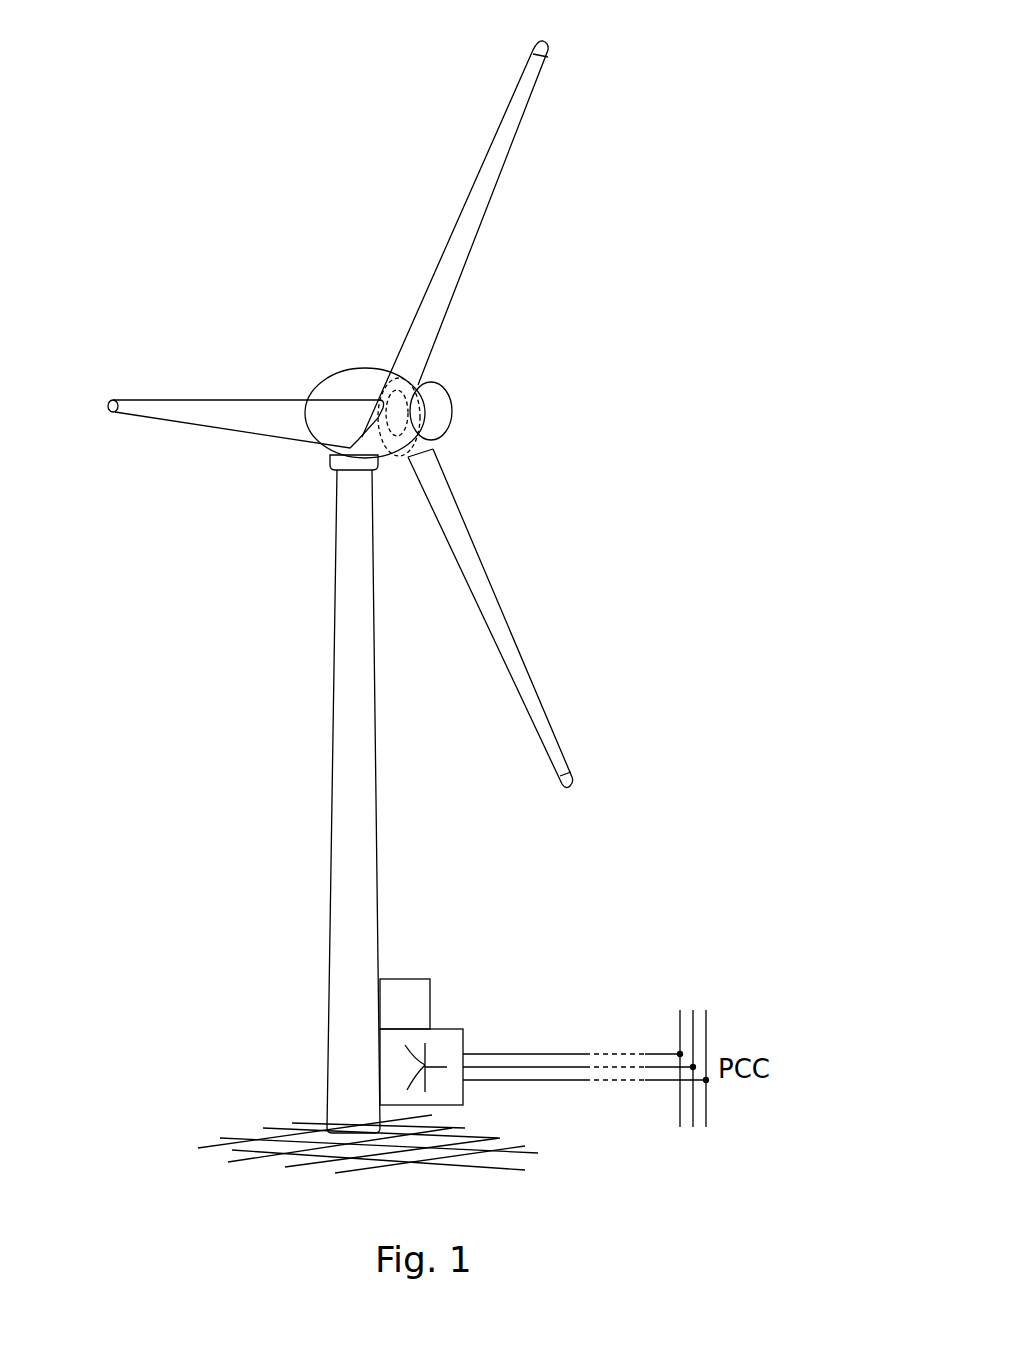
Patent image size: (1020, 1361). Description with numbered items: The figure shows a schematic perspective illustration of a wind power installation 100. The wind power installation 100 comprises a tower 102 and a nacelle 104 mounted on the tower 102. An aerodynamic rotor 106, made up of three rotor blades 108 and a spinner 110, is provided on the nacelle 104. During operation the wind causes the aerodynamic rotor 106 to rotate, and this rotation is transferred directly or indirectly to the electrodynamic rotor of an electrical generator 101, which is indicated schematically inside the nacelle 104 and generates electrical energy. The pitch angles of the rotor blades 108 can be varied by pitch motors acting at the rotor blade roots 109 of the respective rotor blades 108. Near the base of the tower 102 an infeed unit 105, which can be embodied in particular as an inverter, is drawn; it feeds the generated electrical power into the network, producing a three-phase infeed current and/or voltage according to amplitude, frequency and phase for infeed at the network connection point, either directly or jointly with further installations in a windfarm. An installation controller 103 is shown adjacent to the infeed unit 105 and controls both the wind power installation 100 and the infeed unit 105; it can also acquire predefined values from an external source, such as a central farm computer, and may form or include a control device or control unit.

The wind power installation 100 is at (290, 538).
The electrical generator 101 is at (402, 378).
The tower 102 is at (363, 802).
The installation controller 103 is at (427, 1002).
The nacelle 104 is at (348, 390).
The infeed unit 105 is at (463, 1092).
The aerodynamic rotor 106 is at (520, 330).
The rotor blades 108 is at (488, 173).
The rotor blade roots 109 is at (432, 443).
The spinner 110 is at (435, 410).